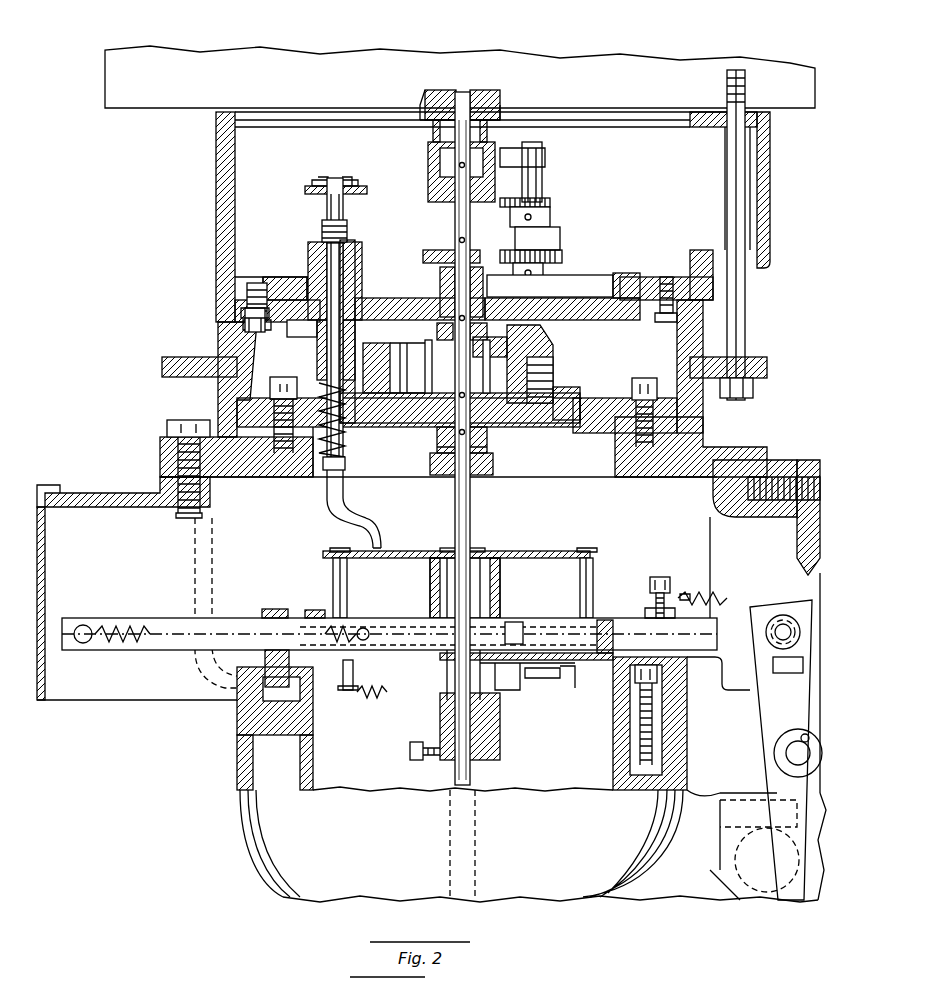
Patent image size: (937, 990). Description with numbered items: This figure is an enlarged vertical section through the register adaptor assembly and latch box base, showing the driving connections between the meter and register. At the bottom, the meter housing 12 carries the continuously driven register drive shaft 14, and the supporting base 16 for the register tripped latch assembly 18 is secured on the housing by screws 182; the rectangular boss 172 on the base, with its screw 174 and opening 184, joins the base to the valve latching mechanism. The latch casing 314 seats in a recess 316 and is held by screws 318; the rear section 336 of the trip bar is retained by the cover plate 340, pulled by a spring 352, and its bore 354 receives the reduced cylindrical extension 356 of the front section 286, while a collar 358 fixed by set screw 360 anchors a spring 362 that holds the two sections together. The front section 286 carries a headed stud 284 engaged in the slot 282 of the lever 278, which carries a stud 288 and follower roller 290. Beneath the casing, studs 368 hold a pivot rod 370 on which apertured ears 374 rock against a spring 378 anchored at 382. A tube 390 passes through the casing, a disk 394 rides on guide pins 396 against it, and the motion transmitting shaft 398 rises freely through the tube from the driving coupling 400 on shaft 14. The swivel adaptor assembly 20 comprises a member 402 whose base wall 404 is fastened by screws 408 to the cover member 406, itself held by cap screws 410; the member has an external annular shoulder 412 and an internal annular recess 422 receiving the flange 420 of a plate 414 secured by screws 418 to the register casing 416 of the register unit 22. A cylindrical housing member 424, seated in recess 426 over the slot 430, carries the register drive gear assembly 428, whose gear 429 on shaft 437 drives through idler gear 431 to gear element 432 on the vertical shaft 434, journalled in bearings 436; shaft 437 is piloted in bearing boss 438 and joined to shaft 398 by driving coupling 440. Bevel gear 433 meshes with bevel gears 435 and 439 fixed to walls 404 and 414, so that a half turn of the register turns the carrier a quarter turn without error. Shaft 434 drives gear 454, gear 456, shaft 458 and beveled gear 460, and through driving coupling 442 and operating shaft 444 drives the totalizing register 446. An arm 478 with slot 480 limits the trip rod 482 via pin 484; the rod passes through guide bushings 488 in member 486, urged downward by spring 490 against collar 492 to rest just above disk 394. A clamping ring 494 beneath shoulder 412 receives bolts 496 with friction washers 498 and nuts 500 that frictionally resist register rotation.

The housing 12 is at (255, 884).
The register drive shaft 14 is at (470, 770).
The supporting base 16 is at (237, 700).
The register tripped latch assembly 18 is at (421, 596).
The swivel adaptor assembly 20 is at (703, 418).
The register unit 22 is at (207, 156).
The rectangular boss 172 is at (775, 460).
The screw 174 is at (805, 470).
The screws 182 is at (613, 748).
The opening 184 is at (650, 526).
The lever 278 is at (767, 690).
The slot 282 is at (775, 610).
The headed stud 284 is at (783, 614).
The front section 286 is at (745, 640).
The stud 288 is at (786, 753).
The follower roller 290 is at (775, 737).
The latch casing 314 is at (436, 604).
The recess 316 is at (348, 695).
The screws 318 is at (278, 609).
The rear section 336 is at (168, 650).
The cover plate 340 is at (512, 622).
The spring 352 is at (125, 625).
The bore 354 is at (580, 622).
The reduced cylindrical extension 356 is at (606, 620).
The collar 358 is at (650, 585).
The set screw 360 is at (658, 580).
The spring 362 is at (695, 590).
The studs 368 is at (540, 680).
The pivot rod 370 is at (568, 690).
The apertured ears 374 is at (505, 690).
The spring 378 is at (372, 700).
The anchor 382 is at (300, 690).
The tube 390 is at (470, 552).
The disk 394 is at (415, 551).
The guide pins 396 is at (333, 572).
The motion transmitting shaft 398 is at (455, 492).
The driving coupling 400 is at (428, 762).
The member 402 is at (237, 398).
The base wall 404 is at (351, 450).
The cover member 406 is at (255, 477).
The screws 408 is at (657, 380).
The cap screws 410 is at (180, 420).
The external annular shoulder 412 is at (218, 352).
The plate 414 is at (540, 297).
The register casing 416 is at (216, 202).
The screws 418 is at (247, 288).
The flange 420 is at (296, 338).
The internal annular recess 422 is at (216, 325).
The cylindrical housing member 424 is at (317, 378).
The recess 426 is at (572, 420).
The register drive gear assembly 428 is at (428, 395).
The gear 429 is at (487, 410).
The slot 430 is at (620, 398).
The idler gear 431 is at (431, 370).
The gear element 432 is at (562, 312).
The bevel gear 433 is at (553, 366).
The vertical shaft 434 is at (455, 230).
The bevel gear 435 is at (550, 418).
The bearings 436 is at (440, 285).
The shaft 437 is at (437, 445).
The bearing boss 438 is at (487, 440).
The bevel gear 439 is at (412, 331).
The driving coupling 440 is at (497, 470).
The driving coupling 442 is at (428, 180).
The operating shaft 444 is at (463, 92).
The totalizing register 446 is at (372, 50).
The gear 454 is at (423, 255).
The gear 456 is at (562, 256).
The vertical shaft 458 is at (542, 190).
The beveled gear 460 is at (550, 210).
The arm 478 is at (362, 193).
The slot 480 is at (312, 205).
The trip rod 482 is at (340, 176).
The pin 484 is at (303, 190).
The member 486 is at (308, 258).
The guide bushings 488 is at (322, 238).
The spring 490 is at (345, 478).
The collar 492 is at (340, 508).
The clamping ring 494 is at (165, 357).
The bolts 496 is at (727, 222).
The friction washers 498 is at (755, 380).
The nuts 500 is at (753, 396).